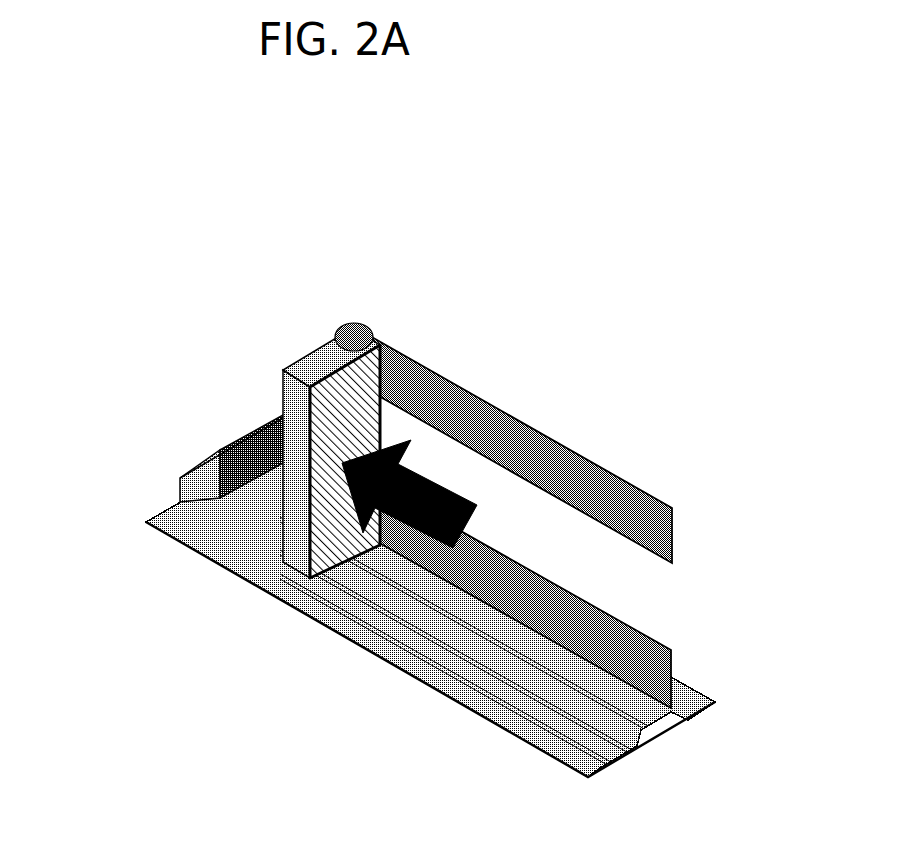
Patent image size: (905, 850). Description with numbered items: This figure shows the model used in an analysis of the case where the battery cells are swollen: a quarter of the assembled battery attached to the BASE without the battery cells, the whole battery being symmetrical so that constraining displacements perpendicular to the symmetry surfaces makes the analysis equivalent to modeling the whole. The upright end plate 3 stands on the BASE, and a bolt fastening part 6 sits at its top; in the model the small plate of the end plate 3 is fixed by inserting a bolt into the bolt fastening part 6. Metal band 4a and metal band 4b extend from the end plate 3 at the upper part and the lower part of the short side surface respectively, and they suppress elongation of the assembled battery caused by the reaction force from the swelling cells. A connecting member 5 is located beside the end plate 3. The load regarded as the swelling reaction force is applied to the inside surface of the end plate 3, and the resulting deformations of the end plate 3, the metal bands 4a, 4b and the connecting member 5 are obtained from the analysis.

The end plate 3 is at (299, 553).
The metal band 4a is at (507, 379).
The metal band 4b is at (662, 632).
The connecting member 5 is at (217, 407).
The bolt fastening part 6 is at (359, 297).
The base BASE is at (430, 697).